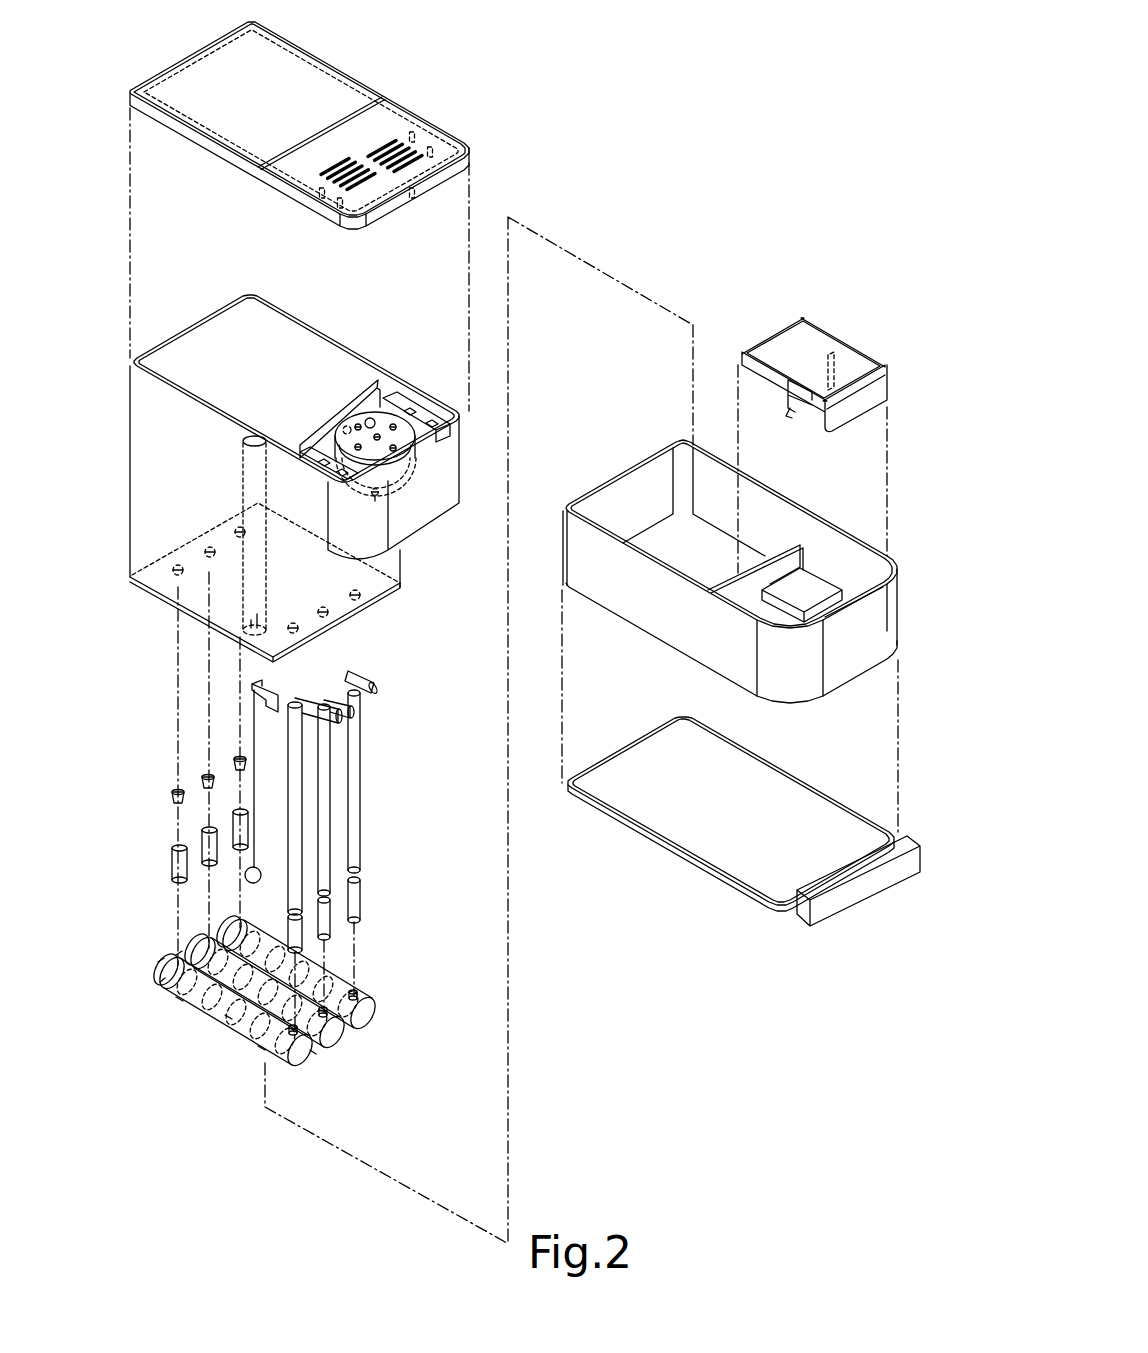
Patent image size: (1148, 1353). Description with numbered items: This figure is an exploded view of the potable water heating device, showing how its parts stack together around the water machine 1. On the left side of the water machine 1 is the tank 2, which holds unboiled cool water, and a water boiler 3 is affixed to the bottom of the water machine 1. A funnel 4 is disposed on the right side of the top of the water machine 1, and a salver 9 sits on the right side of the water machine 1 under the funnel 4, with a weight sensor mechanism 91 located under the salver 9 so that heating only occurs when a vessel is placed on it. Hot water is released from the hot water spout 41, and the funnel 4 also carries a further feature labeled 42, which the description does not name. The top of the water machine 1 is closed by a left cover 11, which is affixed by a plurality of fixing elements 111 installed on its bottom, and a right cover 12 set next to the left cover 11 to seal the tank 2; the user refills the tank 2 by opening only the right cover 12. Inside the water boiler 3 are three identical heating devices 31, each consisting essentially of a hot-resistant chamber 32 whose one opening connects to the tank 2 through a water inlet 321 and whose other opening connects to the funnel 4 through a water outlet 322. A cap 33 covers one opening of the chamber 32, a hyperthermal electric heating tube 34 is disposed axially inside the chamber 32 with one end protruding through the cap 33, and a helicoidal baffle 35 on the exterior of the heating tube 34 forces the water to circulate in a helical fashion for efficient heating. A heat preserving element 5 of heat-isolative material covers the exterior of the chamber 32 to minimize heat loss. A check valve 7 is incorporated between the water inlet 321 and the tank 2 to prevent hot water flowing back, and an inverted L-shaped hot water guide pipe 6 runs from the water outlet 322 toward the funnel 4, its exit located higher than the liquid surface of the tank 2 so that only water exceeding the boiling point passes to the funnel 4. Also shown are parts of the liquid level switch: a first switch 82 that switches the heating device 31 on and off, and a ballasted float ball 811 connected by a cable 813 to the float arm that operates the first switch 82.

The water machine 1 is at (330, 335).
The tank 2 is at (205, 332).
The water boiler 3 is at (612, 467).
The funnel 4 is at (405, 484).
The heat preserving element 5 is at (373, 1003).
The hot water guide pipe 6 is at (356, 790).
The check valve 7 is at (172, 797).
The salver 9 is at (822, 325).
The left cover 11 is at (392, 108).
The right cover 12 is at (195, 142).
The heating device 31 is at (464, 146).
The hot-resistant chamber 32 is at (262, 1049).
The cap 33 is at (160, 982).
The hyperthermal electric heating tube 34 is at (228, 1017).
The helicoidal baffle 35 is at (180, 1000).
The hot water spout 41 is at (378, 495).
The screw holes 42 is at (392, 423).
The first switch 82 is at (268, 708).
The weight sensor mechanism 91 is at (808, 415).
The fixing elements 111 is at (432, 147).
The water inlet 321 is at (166, 966).
The water outlet 322 is at (313, 1053).
The float ball 811 is at (260, 690).
The cable 813 is at (258, 786).